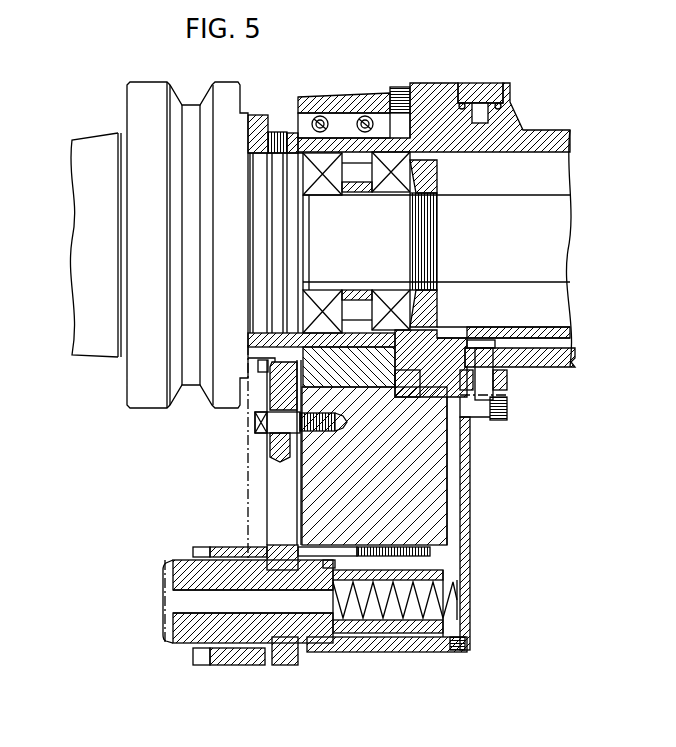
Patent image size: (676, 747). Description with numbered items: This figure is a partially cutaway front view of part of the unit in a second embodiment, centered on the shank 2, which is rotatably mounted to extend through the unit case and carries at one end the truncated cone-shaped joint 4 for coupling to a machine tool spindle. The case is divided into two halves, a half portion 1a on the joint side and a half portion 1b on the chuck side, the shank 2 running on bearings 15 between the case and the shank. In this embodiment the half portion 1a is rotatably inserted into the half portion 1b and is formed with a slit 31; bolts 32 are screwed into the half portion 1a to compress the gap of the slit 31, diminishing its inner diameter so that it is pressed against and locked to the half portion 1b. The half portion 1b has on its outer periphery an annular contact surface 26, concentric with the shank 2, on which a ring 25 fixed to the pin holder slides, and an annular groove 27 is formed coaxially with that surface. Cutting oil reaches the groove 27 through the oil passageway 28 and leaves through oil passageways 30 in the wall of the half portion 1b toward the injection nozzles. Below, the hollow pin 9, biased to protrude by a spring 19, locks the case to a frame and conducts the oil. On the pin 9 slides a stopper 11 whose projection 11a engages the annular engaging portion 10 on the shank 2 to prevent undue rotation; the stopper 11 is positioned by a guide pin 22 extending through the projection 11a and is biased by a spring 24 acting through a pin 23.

The joint 4 is at (95, 240).
The engaging portion 10 is at (263, 372).
The bolts 32 is at (367, 110).
The slit 31 is at (382, 103).
The half portion 1b is at (510, 118).
The annular groove 27 is at (482, 110).
The ring 25 is at (490, 84).
The shank 2 is at (555, 240).
The bearings 15 is at (392, 187).
The oil passageways 30 is at (560, 343).
The half portion 1a is at (360, 373).
The contact surface 26 is at (505, 383).
The oil passageway 28 is at (455, 482).
The guide pin 22 is at (282, 426).
The projection 11a is at (280, 492).
The stopper 11 is at (228, 548).
The pin 9 is at (307, 625).
The spring 24 is at (433, 543).
The pin 23 is at (342, 556).
The spring 19 is at (450, 598).